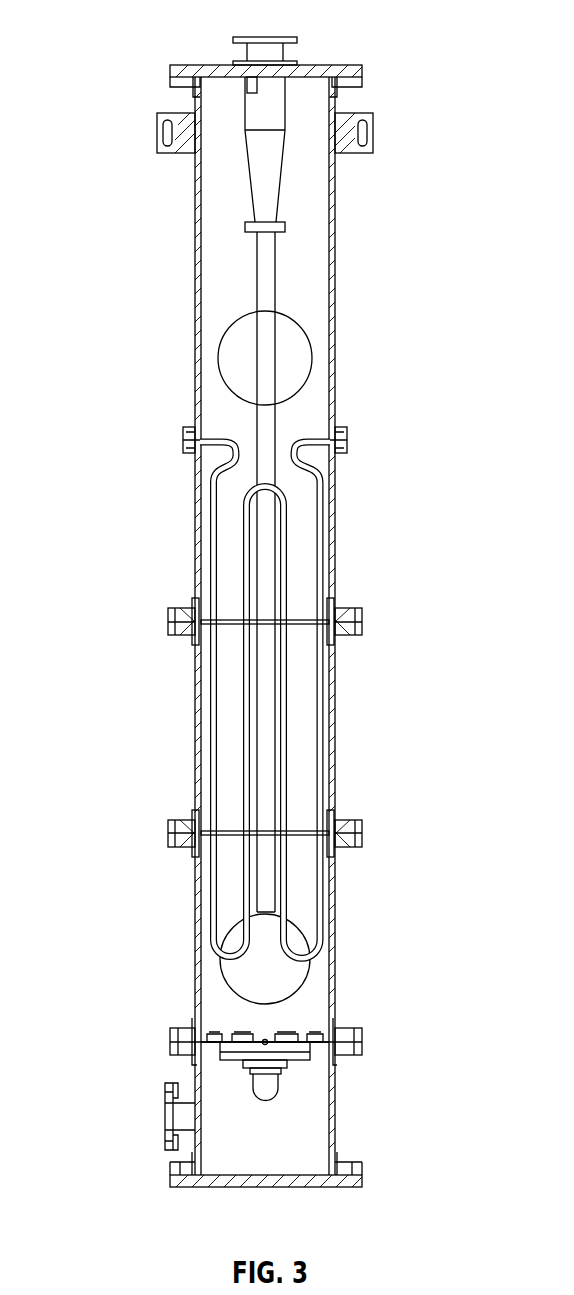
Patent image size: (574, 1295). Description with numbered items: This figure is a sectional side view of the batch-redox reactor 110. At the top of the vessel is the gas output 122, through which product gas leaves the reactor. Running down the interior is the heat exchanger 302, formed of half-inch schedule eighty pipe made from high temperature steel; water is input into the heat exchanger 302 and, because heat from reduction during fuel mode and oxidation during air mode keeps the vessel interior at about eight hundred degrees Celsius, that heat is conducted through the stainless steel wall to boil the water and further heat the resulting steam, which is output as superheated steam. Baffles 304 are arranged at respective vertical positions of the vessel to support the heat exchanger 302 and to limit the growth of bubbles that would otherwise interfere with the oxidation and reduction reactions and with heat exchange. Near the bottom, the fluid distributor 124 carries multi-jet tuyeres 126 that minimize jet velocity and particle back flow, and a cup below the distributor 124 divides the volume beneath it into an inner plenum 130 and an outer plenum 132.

The reactor 110 is at (95, 24).
The gas output 122 is at (277, 36).
The fluid distributor 124 is at (313, 1046).
The multi-jet tuyeres 126 is at (212, 1040).
The inner plenum 130 is at (225, 1060).
The outer plenum 132 is at (320, 1148).
The heat exchanger 302 is at (328, 540).
The baffles 304 is at (297, 619).